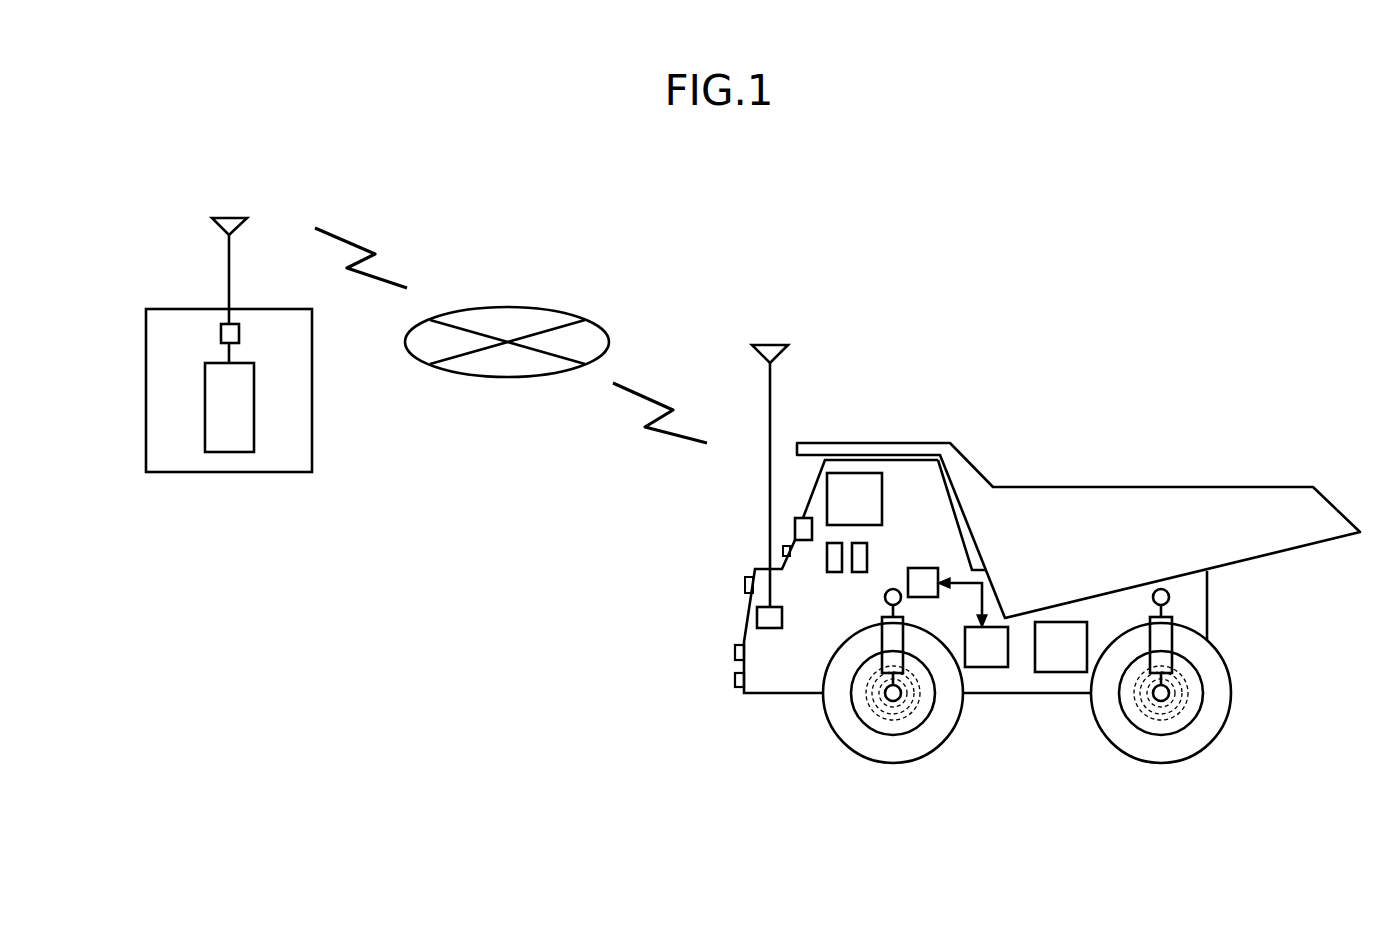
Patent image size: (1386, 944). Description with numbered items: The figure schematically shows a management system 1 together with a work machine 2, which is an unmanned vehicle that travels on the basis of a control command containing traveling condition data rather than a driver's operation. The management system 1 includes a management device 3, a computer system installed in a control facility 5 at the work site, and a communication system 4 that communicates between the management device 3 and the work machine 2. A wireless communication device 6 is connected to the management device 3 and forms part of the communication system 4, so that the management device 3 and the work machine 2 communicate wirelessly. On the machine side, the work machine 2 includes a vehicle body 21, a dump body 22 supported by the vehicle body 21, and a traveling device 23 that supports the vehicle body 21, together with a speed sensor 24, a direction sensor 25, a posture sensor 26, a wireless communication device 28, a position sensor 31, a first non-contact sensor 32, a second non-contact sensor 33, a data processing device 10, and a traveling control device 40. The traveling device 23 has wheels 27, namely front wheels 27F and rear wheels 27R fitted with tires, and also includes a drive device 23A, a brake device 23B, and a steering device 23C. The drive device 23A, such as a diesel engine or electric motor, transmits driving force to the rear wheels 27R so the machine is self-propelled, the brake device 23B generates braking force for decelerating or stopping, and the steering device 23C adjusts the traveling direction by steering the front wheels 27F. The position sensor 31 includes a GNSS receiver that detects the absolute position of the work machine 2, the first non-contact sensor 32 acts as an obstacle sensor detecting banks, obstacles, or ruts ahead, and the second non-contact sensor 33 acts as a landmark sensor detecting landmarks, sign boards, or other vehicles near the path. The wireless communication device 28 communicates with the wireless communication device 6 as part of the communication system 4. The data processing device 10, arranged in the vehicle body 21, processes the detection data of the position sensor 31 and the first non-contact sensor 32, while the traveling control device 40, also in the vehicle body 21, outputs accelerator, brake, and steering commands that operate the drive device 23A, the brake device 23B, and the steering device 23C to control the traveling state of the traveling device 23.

The management system 1 is at (790, 214).
The work machine 2 is at (1154, 431).
The management device 3 is at (205, 398).
The communication system 4 is at (508, 307).
The control facility 5 is at (174, 306).
The wireless communication device 6 is at (221, 332).
The data processing device 10 is at (920, 568).
The vehicle body 21 is at (1220, 613).
The dump body 22 is at (1057, 487).
The traveling device 23 is at (1239, 668).
The drive device 23A is at (1060, 672).
The brake device 23B is at (872, 728).
The steering device 23C is at (913, 702).
The speed sensor 24 is at (1180, 695).
The direction sensor 25 is at (826, 557).
The posture sensor 26 is at (858, 572).
The wheels 27 is at (1026, 705).
The front wheels 27F is at (900, 735).
The rear wheels 27R is at (1163, 735).
The wireless communication device 28 is at (757, 612).
The position sensor 31 is at (796, 526).
The first non-contact sensor 32 is at (735, 652).
The second non-contact sensor 33 is at (735, 684).
The traveling control device 40 is at (985, 667).